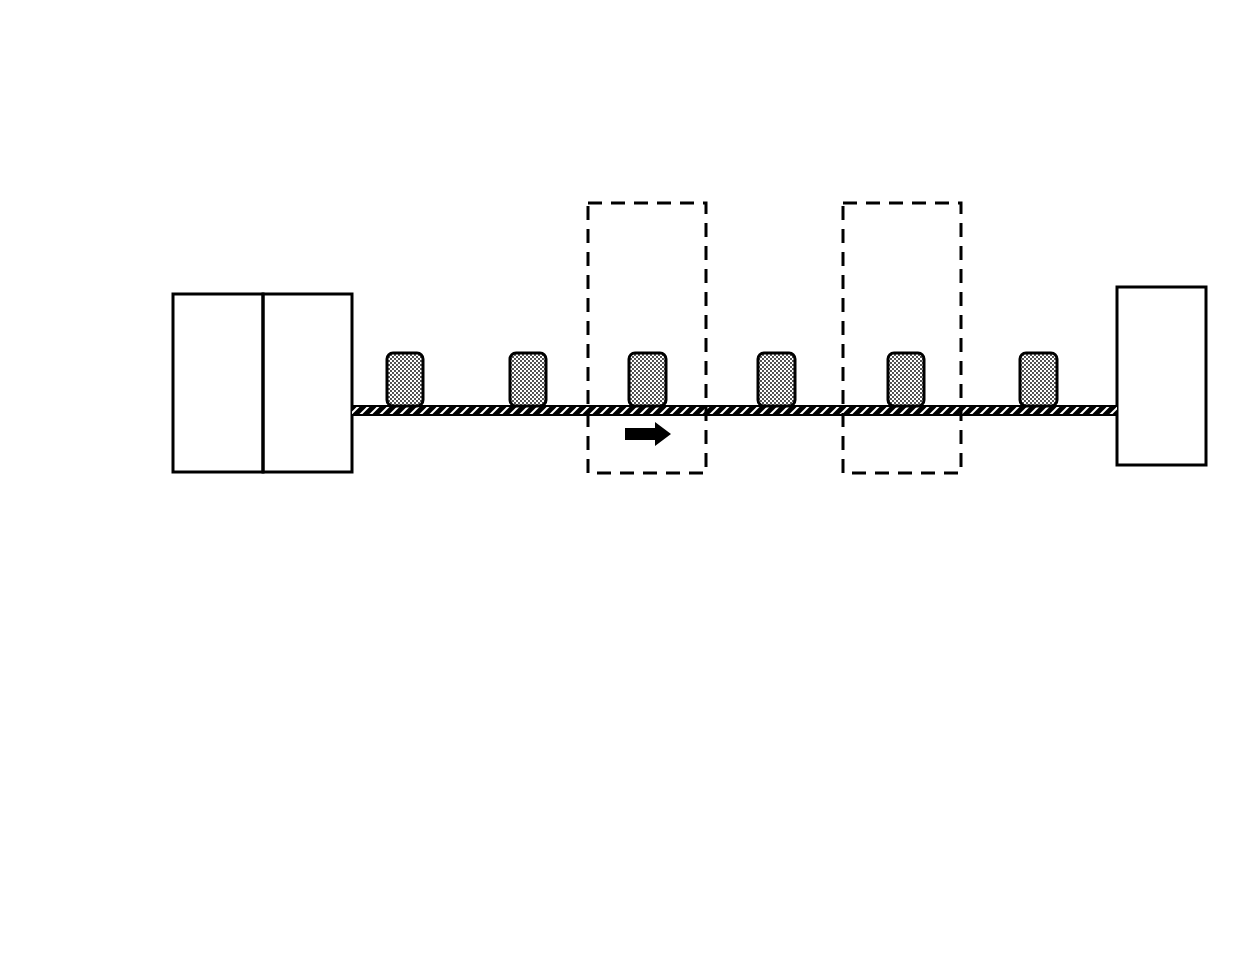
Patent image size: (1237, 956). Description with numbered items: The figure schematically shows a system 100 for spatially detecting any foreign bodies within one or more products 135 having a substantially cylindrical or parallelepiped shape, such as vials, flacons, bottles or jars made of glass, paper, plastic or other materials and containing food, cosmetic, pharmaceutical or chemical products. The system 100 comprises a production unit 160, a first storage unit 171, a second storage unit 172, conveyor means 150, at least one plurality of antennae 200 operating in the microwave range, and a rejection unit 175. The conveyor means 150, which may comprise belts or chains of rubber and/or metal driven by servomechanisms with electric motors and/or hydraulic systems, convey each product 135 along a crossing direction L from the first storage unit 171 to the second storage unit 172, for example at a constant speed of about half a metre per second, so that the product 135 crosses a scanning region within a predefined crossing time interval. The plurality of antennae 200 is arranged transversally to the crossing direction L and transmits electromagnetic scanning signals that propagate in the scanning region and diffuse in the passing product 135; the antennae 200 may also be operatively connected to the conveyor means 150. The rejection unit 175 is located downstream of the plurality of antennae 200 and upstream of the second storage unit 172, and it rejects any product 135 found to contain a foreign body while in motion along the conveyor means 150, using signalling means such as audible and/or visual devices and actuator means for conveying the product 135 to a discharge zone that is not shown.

The system 100 is at (383, 90).
The product 135 is at (410, 353).
The conveyor means 150 is at (468, 415).
The production unit 160 is at (210, 473).
The first storage unit 171 is at (297, 473).
The second storage unit 172 is at (1158, 466).
The rejection unit 175 is at (847, 203).
The plurality of antennae 200 is at (595, 203).
The crossing direction L is at (642, 440).